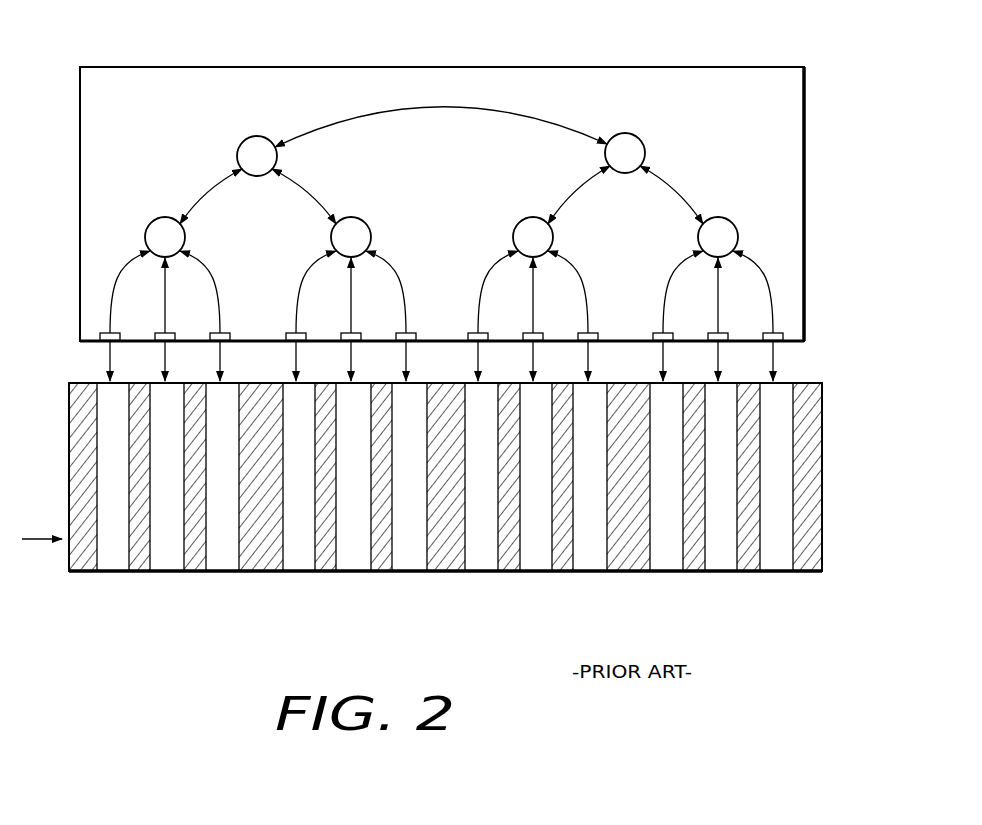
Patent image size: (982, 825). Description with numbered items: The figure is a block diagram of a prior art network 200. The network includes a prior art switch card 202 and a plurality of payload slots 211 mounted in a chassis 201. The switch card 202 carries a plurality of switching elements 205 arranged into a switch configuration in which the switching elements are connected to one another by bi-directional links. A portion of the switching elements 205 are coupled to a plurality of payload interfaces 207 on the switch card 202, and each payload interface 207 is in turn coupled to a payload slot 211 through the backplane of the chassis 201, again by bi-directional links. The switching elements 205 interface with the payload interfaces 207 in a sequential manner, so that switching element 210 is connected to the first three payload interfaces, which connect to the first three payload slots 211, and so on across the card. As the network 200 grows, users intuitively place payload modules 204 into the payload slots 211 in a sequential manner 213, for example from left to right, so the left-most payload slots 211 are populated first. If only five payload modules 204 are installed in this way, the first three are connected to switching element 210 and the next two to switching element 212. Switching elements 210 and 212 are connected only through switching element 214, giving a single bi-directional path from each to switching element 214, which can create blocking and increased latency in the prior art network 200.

The prior art network 200 is at (468, 663).
The chassis 201 is at (453, 188).
The prior art switch card 202 is at (713, 66).
The payload modules 204 is at (800, 588).
The switching elements 205 is at (178, 165).
The payload interfaces 207 is at (102, 335).
The switching element 210 is at (155, 223).
The payload slots 211 is at (152, 382).
The switching element 212 is at (366, 226).
The sequential manner 213 is at (35, 539).
The switching element 214 is at (246, 141).